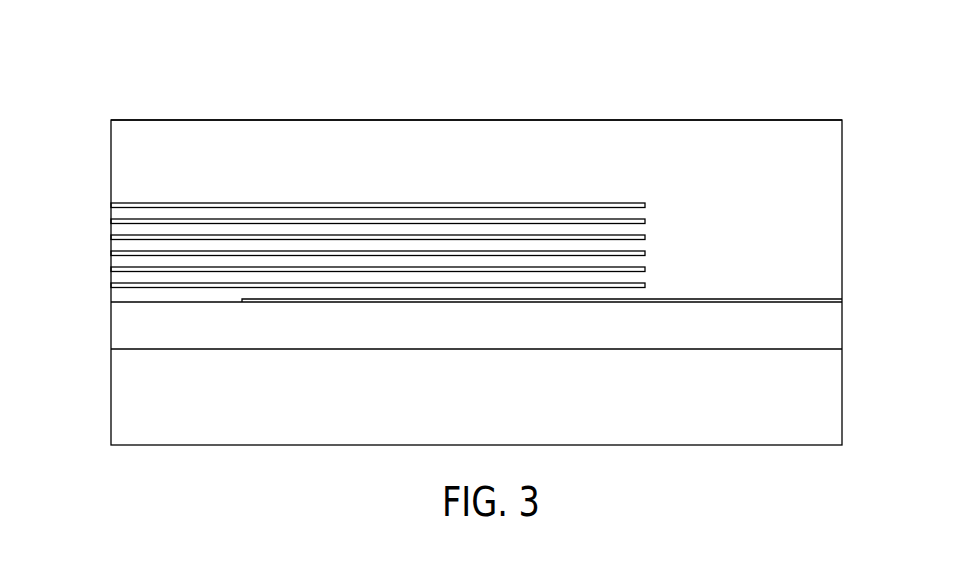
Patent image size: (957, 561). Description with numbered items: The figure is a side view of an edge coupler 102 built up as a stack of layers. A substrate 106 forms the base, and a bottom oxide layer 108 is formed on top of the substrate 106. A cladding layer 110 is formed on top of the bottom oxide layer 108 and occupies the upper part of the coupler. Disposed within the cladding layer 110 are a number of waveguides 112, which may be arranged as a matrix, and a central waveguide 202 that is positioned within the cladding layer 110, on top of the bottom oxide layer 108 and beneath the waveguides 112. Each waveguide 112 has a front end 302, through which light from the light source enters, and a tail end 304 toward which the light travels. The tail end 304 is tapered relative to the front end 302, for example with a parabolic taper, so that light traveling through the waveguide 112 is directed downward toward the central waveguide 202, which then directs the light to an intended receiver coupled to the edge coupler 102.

The edge coupler 102 is at (791, 80).
The substrate 106 is at (122, 405).
The bottom oxide layer 108 is at (122, 327).
The cladding layer 110 is at (130, 163).
The waveguides 112 is at (382, 240).
The central waveguide 202 is at (766, 298).
The front end 302 is at (382, 238).
The tail end 304 is at (418, 206).